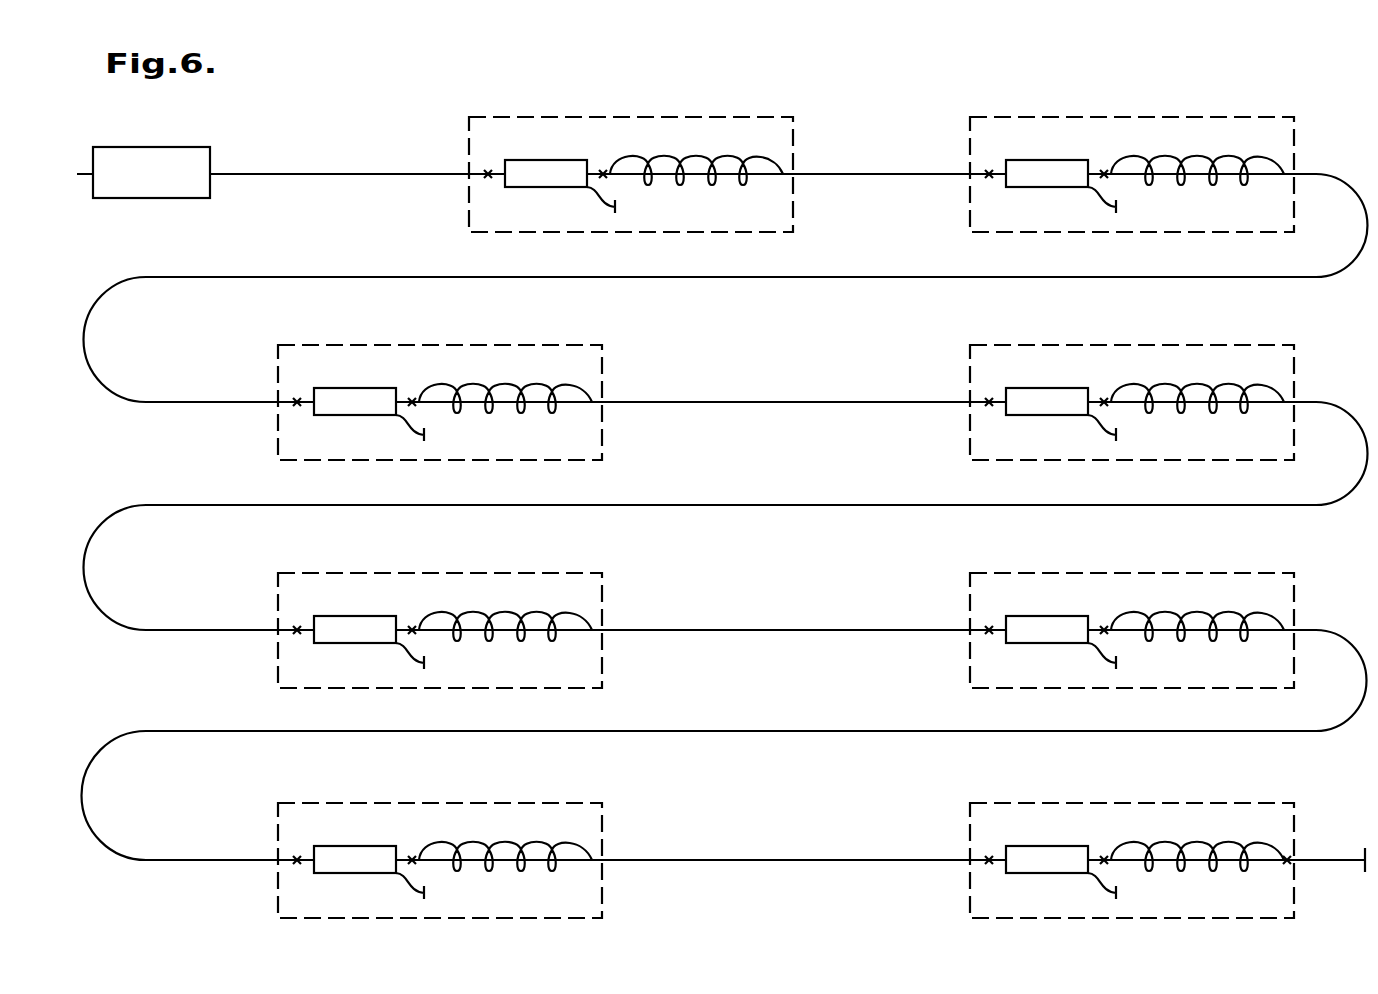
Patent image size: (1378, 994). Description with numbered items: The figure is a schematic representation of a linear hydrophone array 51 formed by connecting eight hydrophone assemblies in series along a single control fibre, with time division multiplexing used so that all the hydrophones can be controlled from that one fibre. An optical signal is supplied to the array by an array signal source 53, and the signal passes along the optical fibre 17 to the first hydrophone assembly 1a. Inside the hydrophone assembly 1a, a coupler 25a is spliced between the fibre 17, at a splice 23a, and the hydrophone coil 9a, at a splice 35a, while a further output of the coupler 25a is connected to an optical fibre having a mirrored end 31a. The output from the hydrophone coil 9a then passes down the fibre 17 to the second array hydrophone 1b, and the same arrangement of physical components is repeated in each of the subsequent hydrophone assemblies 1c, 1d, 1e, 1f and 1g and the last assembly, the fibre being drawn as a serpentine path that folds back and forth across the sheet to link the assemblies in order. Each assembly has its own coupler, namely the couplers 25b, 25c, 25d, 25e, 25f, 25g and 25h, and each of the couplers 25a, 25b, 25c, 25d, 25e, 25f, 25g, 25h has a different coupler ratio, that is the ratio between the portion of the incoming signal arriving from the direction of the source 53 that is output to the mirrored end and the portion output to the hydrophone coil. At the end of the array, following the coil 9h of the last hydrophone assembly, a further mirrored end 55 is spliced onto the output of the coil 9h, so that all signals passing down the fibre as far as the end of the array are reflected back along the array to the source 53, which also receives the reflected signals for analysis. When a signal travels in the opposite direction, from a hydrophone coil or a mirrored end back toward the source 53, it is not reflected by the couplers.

The optical fiber device 51 is at (378, 80).
The array signal source 53 is at (138, 147).
The mirrored end 55 is at (1345, 862).
The optical fibre 17 is at (340, 173).
The hydrophone assembly 1a is at (631, 146).
The hydrophone assembly 1b is at (1132, 146).
The hydrophone assembly 1c is at (440, 374).
The hydrophone assembly 1d is at (1132, 374).
The hydrophone assembly 1e is at (440, 602).
The hydrophone assembly 1f is at (1132, 602).
The hydrophone assembly 1g is at (440, 832).
The hydrophone coil 9a is at (696, 155).
The hydrophone coil 9h is at (1132, 832).
The splice 23a is at (509, 197).
The splice 35a is at (627, 152).
The mirrored end 31a is at (629, 206).
The coupler 25a is at (546, 157).
The coupler 25b is at (1047, 157).
The coupler 25c is at (355, 385).
The coupler 25d is at (1047, 385).
The coupler 25e is at (355, 613).
The coupler 25f is at (1047, 613).
The coupler 25g is at (355, 843).
The coupler 25h is at (1047, 843).